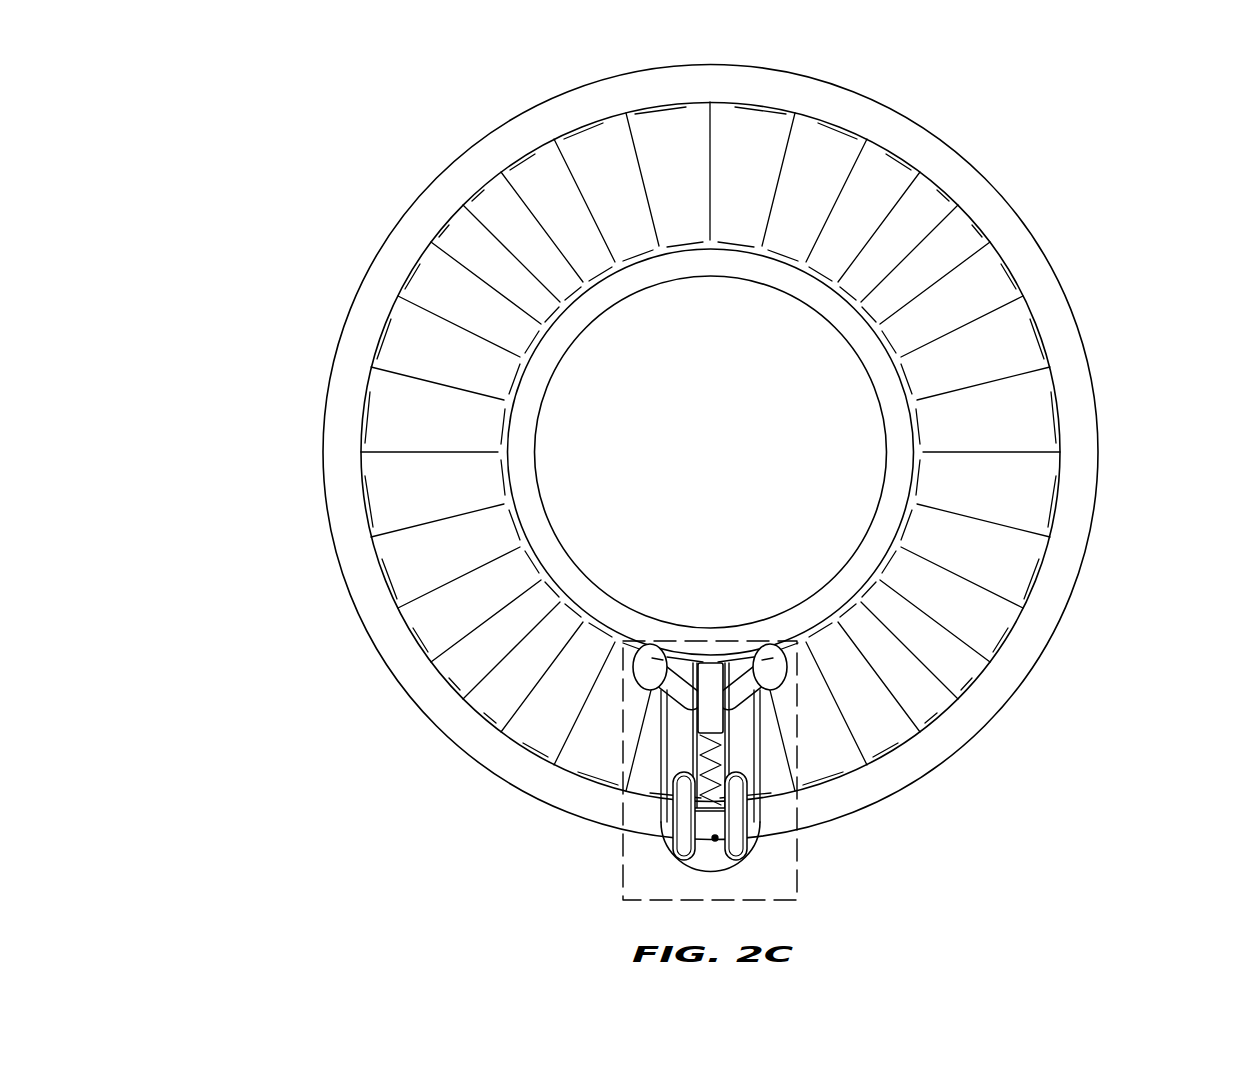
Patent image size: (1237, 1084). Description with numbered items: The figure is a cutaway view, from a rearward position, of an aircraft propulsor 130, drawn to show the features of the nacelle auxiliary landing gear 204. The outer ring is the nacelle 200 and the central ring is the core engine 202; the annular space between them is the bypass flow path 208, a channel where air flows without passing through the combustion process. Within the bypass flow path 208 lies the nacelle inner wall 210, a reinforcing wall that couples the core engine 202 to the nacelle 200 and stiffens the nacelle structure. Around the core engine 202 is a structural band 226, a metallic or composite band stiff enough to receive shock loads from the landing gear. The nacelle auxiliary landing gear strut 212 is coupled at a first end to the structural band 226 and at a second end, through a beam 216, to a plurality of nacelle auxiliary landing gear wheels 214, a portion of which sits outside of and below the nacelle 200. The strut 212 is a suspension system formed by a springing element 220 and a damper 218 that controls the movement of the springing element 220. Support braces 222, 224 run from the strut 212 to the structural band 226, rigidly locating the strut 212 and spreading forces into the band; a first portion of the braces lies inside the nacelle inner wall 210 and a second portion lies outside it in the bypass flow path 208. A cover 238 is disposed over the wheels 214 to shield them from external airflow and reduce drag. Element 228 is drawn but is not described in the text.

The aircraft propulsor 130 is at (272, 143).
The nacelle 200 is at (1007, 240).
The core engine 202 is at (843, 417).
The nacelle auxiliary landing gear 204 is at (622, 890).
The bypass flow path 208 is at (843, 125).
The nacelle inner wall 210 is at (755, 778).
The nacelle auxiliary landing gear strut 212 is at (415, 480).
The nacelle auxiliary landing gear wheel 214 is at (745, 822).
The beam 216 is at (675, 818).
The damper 218 is at (762, 690).
The springing element 220 is at (698, 745).
The support brace 222 is at (790, 668).
The support brace 224 is at (655, 703).
The structural band 226 is at (545, 592).
The yoke 228 is at (690, 850).
The cover 238 is at (716, 840).